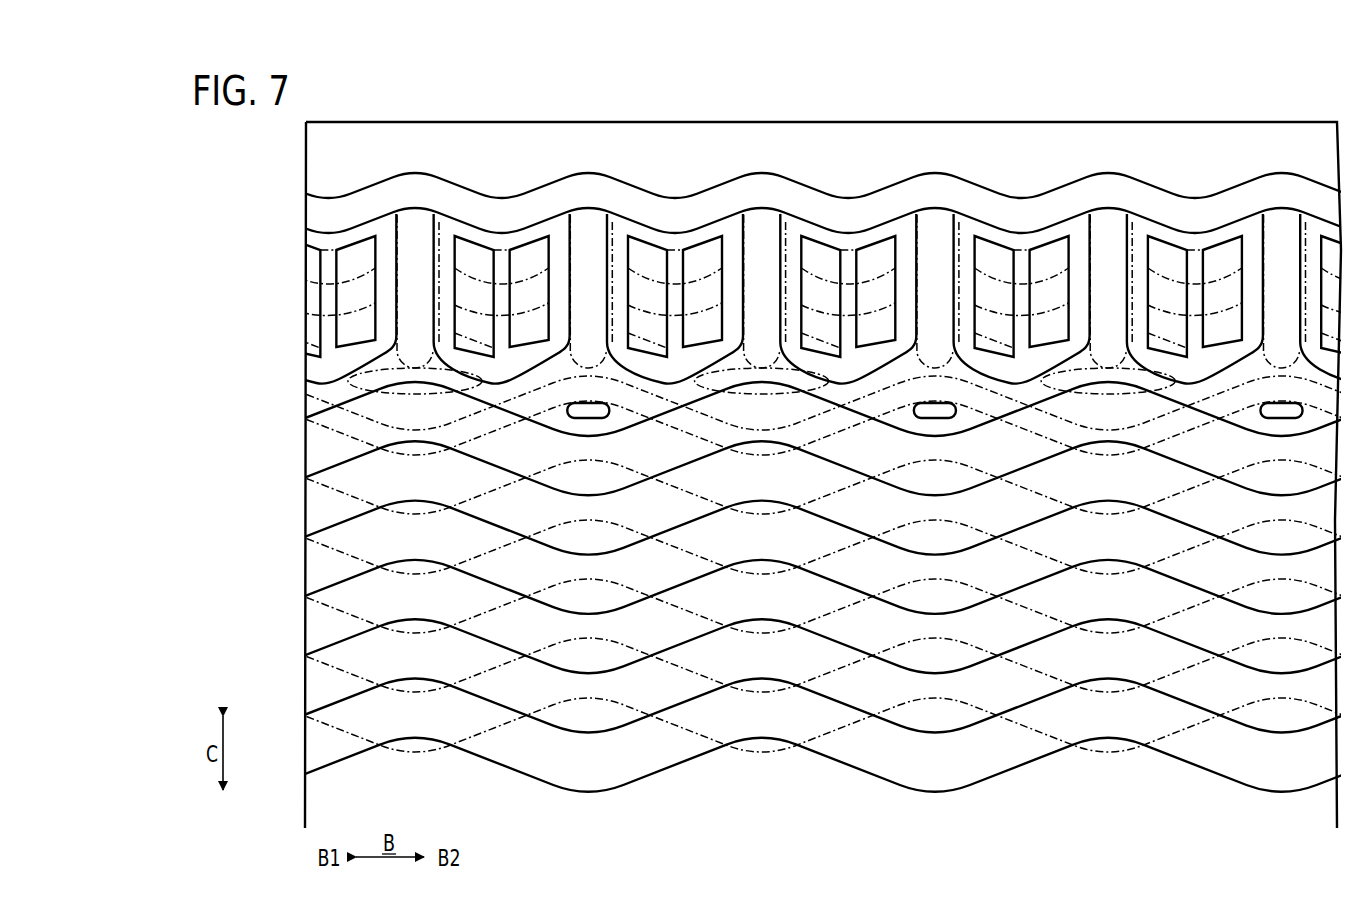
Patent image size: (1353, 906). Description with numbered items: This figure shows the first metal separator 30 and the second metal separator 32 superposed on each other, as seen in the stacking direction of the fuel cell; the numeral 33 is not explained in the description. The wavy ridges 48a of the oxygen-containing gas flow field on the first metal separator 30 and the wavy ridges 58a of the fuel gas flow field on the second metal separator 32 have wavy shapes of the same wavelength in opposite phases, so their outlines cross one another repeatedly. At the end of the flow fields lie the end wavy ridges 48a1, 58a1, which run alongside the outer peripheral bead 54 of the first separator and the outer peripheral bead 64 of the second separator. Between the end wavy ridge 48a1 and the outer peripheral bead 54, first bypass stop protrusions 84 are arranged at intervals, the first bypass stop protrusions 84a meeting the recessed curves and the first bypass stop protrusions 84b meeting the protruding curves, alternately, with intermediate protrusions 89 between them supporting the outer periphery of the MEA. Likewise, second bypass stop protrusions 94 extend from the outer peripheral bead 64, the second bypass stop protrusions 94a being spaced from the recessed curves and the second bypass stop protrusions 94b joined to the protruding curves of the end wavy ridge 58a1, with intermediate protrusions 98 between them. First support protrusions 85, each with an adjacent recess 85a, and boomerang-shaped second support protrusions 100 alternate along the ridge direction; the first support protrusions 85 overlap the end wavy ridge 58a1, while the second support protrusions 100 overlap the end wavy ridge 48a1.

The first metal separator 30 is at (1226, 118).
The second metal separator 32 is at (1267, 118).
The back yoke 33 is at (383, 106).
The outer peripheral bead 54 is at (1248, 192).
The outer peripheral bead 64 is at (1295, 187).
The first bypass stop protrusions 84 is at (806, 233).
The first bypass stop protrusion 84a is at (588, 222).
The first bypass stop protrusion 84b is at (762, 222).
The first support protrusion 85 is at (916, 458).
The recess 85a is at (580, 418).
The intermediate protrusions 89 is at (525, 297).
The second bypass stop protrusions 94 is at (851, 249).
The second bypass stop protrusion 94a is at (787, 233).
The second bypass stop protrusion 94b is at (613, 233).
The intermediate protrusions 98 is at (540, 320).
The second support protrusions 100 is at (350, 383).
The wavy ridges 58a is at (815, 587).
The end wavy ridges 58a1 is at (503, 422).
The wavy ridges 48a is at (815, 564).
The end wavy ridges 48a1 is at (853, 392).